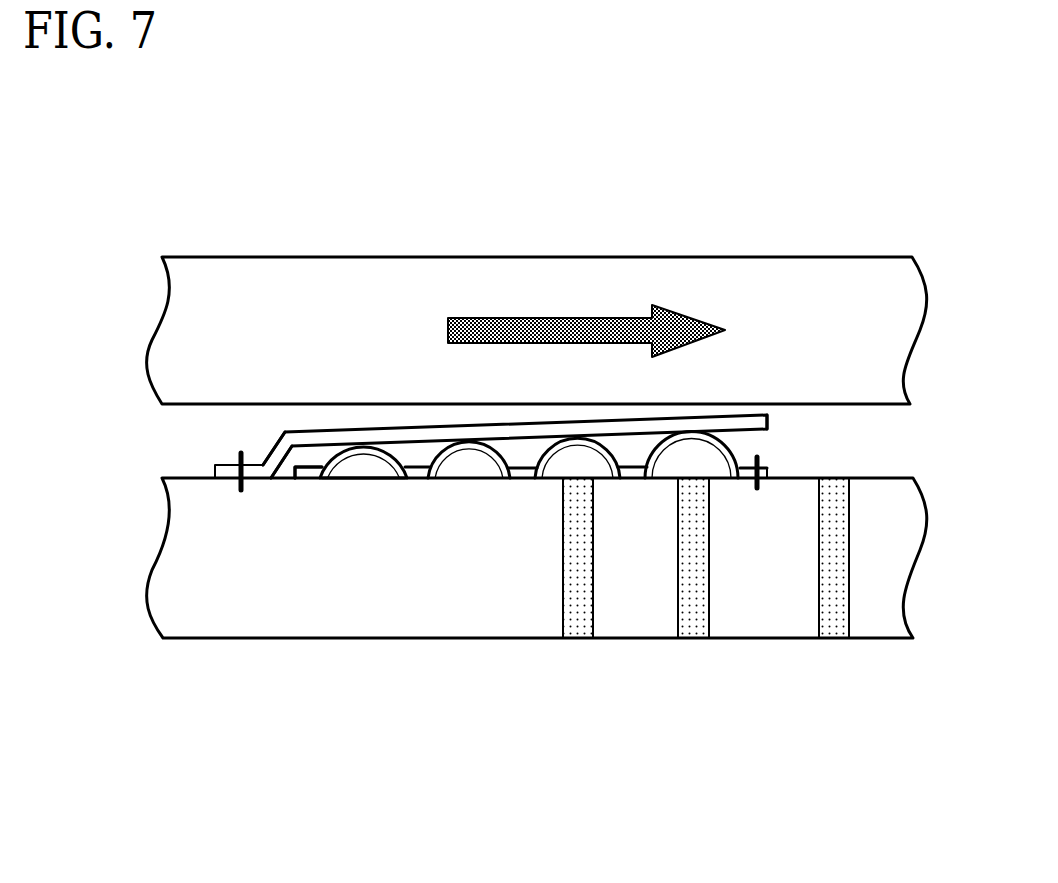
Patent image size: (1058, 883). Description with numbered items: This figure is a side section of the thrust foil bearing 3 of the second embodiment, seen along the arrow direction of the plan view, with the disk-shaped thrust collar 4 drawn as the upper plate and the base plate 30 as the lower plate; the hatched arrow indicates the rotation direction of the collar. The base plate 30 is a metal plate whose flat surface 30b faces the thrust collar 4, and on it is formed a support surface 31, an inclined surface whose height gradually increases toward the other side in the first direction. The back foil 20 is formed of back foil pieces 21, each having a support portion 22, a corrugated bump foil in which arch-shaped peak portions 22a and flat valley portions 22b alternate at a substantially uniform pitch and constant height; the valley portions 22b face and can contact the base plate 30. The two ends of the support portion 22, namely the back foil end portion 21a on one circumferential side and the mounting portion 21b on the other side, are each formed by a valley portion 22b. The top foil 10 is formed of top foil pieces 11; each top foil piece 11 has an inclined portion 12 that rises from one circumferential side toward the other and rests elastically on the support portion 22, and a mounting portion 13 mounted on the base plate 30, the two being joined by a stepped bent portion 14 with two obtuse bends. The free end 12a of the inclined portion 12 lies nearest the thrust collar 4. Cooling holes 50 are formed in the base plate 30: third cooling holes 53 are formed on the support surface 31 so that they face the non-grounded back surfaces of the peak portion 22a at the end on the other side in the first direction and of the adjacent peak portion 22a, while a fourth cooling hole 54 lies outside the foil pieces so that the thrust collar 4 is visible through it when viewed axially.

The thrust foil bearing 3 is at (218, 222).
The thrust collar 4 is at (525, 257).
The top foil 10 is at (538, 380).
The top foil piece 11 is at (538, 380).
The inclined portion 12 is at (440, 426).
The tip end of plate portion 12a is at (770, 422).
The mounting portion 13 is at (232, 462).
The bent portion 14 is at (273, 450).
The back foil 20 is at (526, 592).
The back foil piece 21 is at (526, 592).
The back foil end portion 21a is at (305, 467).
The mounting portion 21b is at (762, 462).
The support portion 22 is at (529, 590).
The peak portion 22a is at (488, 446).
The valley portion 22b is at (525, 463).
The base plate 30 is at (188, 640).
The flat surface 30b is at (197, 477).
The support surface 31 is at (343, 478).
The cooling hole 50 is at (734, 631).
The third cooling hole 53 is at (680, 593).
The fourth cooling hole 54 is at (822, 598).